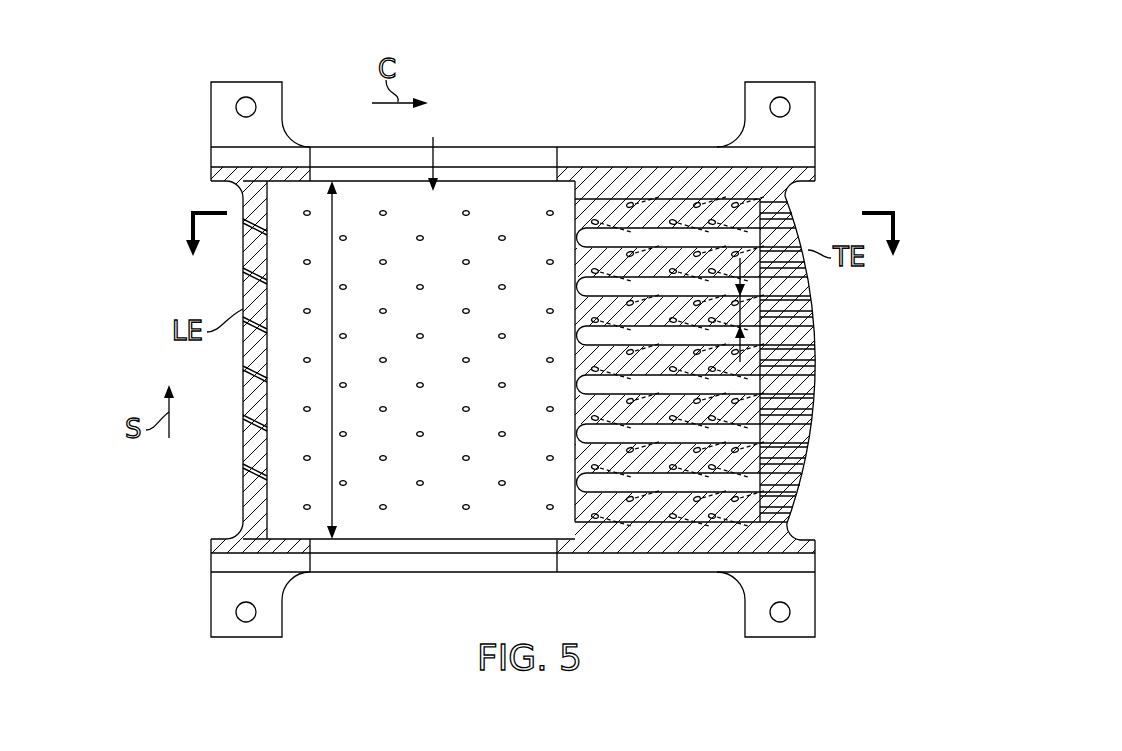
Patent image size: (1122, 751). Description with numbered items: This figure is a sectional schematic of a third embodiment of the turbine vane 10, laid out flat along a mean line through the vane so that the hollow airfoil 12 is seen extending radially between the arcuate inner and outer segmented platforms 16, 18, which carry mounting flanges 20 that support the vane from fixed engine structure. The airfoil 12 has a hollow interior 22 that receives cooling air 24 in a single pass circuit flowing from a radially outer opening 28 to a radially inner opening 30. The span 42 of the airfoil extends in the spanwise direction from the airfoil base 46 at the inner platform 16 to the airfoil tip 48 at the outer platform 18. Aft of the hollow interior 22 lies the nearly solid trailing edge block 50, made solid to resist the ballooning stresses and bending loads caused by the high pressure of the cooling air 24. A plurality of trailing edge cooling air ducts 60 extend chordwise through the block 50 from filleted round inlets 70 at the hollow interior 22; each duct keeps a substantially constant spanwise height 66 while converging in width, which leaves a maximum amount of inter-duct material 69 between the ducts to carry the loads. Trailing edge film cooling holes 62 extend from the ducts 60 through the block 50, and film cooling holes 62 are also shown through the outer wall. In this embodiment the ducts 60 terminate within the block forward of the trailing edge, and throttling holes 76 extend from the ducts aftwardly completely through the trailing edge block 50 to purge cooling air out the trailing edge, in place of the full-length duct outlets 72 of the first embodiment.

The turbine vane 10 is at (383, 622).
The hollow airfoil 12 is at (243, 503).
The radially inner segmented platform 16 is at (650, 573).
The radially outer segmented platform 18 is at (630, 148).
The mounting flange 20 is at (248, 90).
The hollow interior 22 is at (453, 273).
The cooling air 24 is at (436, 137).
The radially outer opening 28 is at (555, 147).
The radially inner opening 30 is at (556, 546).
The span 42 is at (333, 357).
The airfoil base 46 is at (615, 553).
The airfoil tip 48 is at (580, 167).
The trailing edge block 50 is at (690, 176).
The trailing edge cooling air ducts 60 is at (752, 358).
The trailing edge film cooling holes 62 is at (421, 388).
The spanwise height 66 is at (742, 305).
The inter-duct material 69 is at (795, 490).
The filleted round inlet 70 is at (576, 199).
The outlet 72 is at (761, 222).
The throttling holes 76 is at (806, 458).